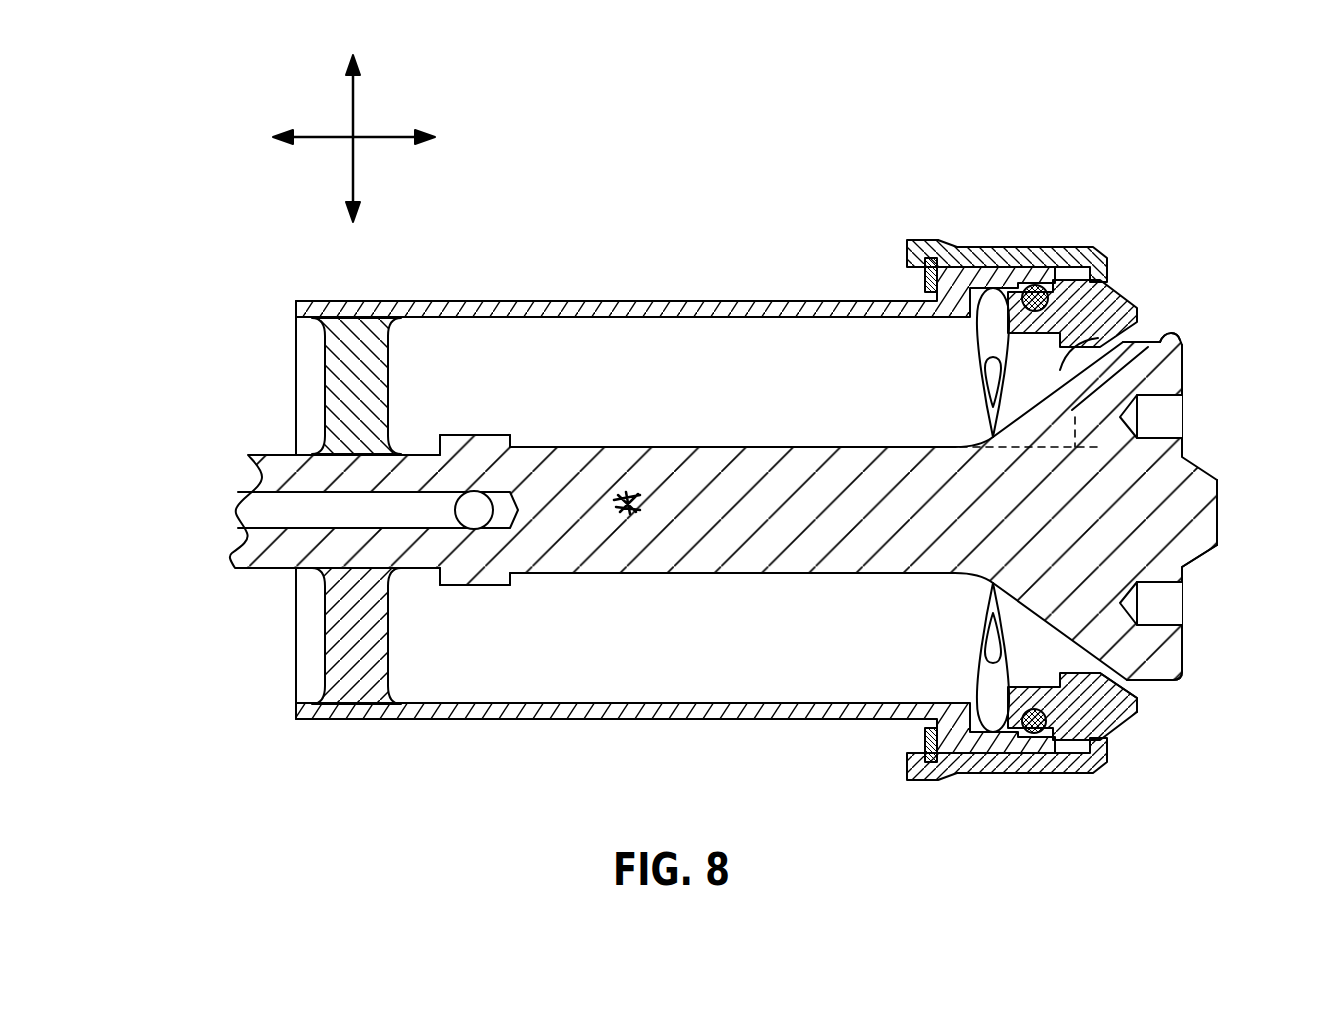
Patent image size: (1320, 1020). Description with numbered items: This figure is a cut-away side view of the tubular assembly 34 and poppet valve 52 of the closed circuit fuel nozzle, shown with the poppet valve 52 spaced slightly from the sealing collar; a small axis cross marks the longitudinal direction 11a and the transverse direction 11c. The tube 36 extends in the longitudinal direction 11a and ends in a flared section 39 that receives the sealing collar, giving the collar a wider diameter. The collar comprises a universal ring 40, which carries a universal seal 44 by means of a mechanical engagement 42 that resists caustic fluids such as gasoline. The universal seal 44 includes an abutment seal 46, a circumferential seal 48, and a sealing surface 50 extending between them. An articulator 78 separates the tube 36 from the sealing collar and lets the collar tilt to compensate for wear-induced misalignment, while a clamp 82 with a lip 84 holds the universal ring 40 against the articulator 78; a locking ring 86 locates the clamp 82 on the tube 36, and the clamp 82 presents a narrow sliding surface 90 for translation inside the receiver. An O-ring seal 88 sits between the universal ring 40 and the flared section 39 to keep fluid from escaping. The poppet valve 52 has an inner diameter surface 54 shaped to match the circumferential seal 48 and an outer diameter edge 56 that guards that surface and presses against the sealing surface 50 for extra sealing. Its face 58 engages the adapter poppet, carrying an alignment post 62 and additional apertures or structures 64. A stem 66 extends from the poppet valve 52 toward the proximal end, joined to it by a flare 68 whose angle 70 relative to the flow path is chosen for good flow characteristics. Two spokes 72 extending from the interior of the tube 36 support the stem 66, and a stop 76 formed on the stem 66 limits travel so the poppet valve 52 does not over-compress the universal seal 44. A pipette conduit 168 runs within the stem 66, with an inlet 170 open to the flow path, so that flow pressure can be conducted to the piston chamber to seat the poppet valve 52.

The longitudinal direction 11a is at (393, 137).
The transverse direction 11c is at (353, 95).
The tubular assembly 34 is at (693, 165).
The tube 36 is at (560, 290).
The spokes 72 is at (382, 370).
The stop 76 is at (486, 436).
The stem 66 is at (596, 507).
The inlet 170 is at (484, 516).
The pipette conduit 168 is at (290, 560).
The poppet valve 52 is at (738, 458).
The apertures or structures 64 is at (1160, 416).
The angle 70 is at (1140, 386).
The circumferential seal 48 is at (1073, 350).
The sealing surface 50 is at (1183, 352).
The outer diameter edge 56 is at (1178, 336).
The inner diameter surface 54 is at (1161, 326).
The alignment post 62 is at (1220, 500).
The face 58 is at (1208, 577).
The universal seal 44 is at (1186, 678).
The articulator 78 is at (970, 381).
The flare 68 is at (1048, 637).
The clamp 82 is at (1004, 247).
The flared section 39 is at (945, 776).
The sliding surface 90 is at (922, 230).
The locking ring 86 is at (927, 280).
The abutment seal 46 is at (1137, 310).
The lip 84 is at (1105, 280).
The universal ring 40 is at (1116, 735).
The mechanical engagement 42 is at (1130, 706).
The O-ring seal 88 is at (1034, 732).